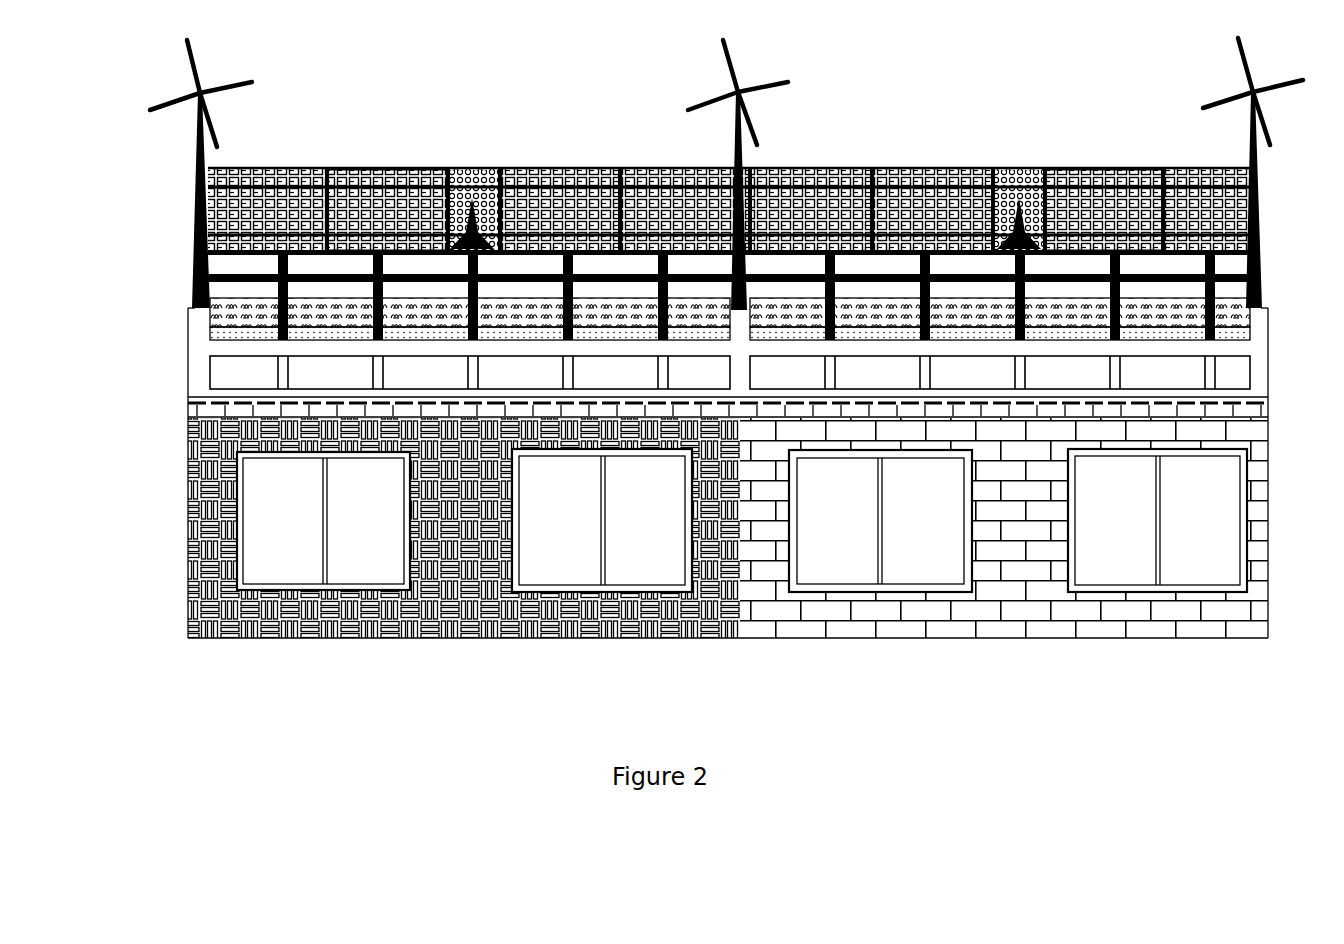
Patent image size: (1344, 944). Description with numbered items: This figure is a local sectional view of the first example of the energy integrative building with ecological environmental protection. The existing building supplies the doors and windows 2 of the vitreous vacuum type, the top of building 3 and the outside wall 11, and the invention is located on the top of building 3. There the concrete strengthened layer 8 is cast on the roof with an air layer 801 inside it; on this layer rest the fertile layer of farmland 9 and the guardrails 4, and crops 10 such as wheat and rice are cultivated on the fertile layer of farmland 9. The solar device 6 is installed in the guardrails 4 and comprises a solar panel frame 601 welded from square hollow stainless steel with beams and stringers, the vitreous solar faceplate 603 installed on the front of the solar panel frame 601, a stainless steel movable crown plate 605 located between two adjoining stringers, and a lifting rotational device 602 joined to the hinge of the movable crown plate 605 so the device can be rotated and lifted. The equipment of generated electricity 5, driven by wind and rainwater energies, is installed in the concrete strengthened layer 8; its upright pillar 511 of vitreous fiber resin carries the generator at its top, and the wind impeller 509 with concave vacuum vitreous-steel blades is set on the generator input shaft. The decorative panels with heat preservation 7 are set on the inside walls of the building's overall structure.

The doors and windows 2 is at (261, 521).
The top of building 3 is at (1230, 408).
The guardrails 4 is at (232, 276).
The equipment of generated electricity 5 is at (178, 174).
The solar device 6 is at (680, 176).
The decorative panels with heat preservation 7 is at (188, 437).
The concrete strengthened layer on the top of building 8 is at (248, 396).
The fertile layer of farmland 9 is at (248, 336).
The crops 10 is at (248, 305).
The outside wall 11 is at (1232, 602).
The wind impeller 509 is at (190, 56).
The upright pillar 511 is at (205, 151).
The solar panel frame 601 is at (1104, 174).
The lifting rotational device 602 is at (437, 174).
The solar faceplate 603 is at (361, 174).
The movable crown plate 605 is at (985, 174).
The air layer 801 is at (248, 369).